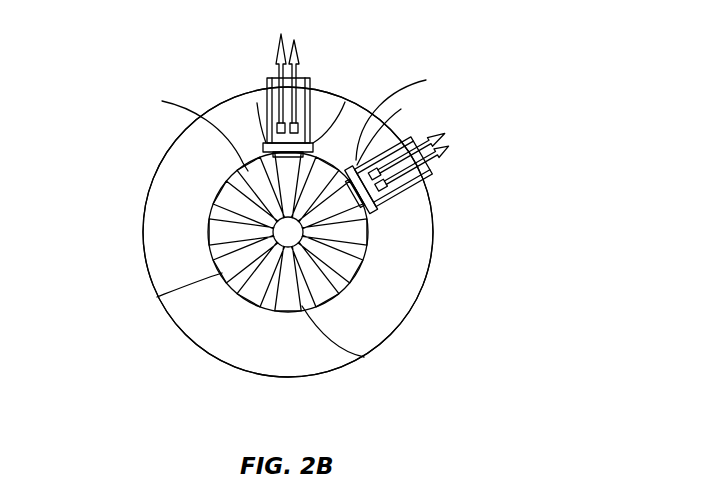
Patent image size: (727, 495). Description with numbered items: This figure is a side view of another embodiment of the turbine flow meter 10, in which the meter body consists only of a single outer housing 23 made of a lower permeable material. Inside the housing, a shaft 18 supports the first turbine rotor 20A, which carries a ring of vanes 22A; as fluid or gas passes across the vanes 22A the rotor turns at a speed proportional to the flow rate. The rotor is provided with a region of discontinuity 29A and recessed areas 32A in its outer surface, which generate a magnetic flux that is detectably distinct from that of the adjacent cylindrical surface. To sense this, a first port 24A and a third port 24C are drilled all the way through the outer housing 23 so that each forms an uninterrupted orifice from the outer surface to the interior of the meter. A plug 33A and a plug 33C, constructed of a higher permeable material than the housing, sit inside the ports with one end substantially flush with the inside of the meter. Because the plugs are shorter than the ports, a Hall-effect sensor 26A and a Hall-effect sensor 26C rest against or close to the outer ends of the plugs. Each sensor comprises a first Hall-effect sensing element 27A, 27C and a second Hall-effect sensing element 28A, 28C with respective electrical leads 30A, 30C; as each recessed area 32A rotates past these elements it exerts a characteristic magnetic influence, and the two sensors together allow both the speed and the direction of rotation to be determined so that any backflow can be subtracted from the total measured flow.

The turbine flow meter 10 is at (385, 76).
The shaft 18 is at (157, 298).
The first turbine rotor 20A is at (410, 115).
The vanes 22A is at (223, 198).
The outer housing 23 is at (172, 145).
The first port 24A is at (398, 132).
The third port 24C is at (257, 103).
The Hall-effect sensor 26A is at (399, 206).
The Hall-effect sensor 26C is at (266, 68).
The first Hall-effect sensing element 27A is at (416, 138).
The first Hall-effect sensing element 27C is at (267, 84).
The second Hall-effect sensing element 28A is at (385, 185).
The second Hall-effect sensing element 28C is at (310, 80).
The region of discontinuity 29A is at (184, 131).
The electrical leads 30A is at (437, 160).
The electrical leads 30C is at (293, 39).
The recessed area 32A is at (364, 357).
The plug 33A is at (432, 247).
The plug 33C is at (331, 156).